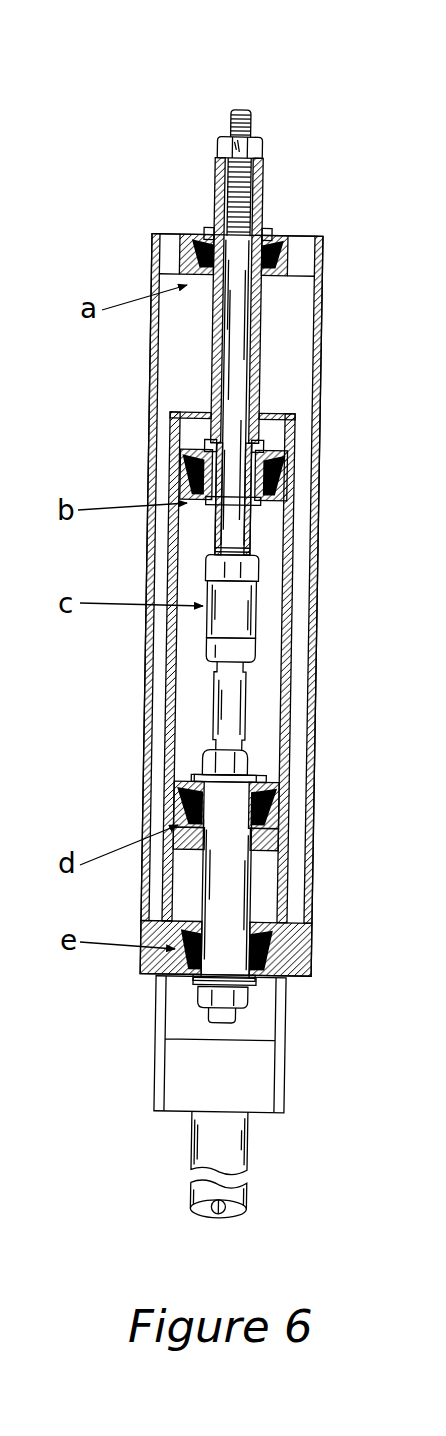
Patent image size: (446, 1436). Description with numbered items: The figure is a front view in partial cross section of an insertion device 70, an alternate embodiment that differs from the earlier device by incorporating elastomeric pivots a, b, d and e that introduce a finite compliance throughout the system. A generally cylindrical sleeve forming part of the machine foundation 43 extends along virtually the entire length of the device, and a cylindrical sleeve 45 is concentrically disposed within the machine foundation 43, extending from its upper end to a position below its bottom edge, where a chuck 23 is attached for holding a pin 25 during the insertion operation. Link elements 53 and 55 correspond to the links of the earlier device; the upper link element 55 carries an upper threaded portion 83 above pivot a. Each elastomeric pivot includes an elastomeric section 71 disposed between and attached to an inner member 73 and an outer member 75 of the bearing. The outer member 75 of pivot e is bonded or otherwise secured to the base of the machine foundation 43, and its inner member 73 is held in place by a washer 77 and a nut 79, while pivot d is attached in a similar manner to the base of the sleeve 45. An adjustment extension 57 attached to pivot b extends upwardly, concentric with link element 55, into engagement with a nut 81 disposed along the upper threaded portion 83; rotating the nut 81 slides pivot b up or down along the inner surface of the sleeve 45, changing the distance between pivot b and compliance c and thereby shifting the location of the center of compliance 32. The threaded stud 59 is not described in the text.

The insertion device 70 is at (332, 93).
The chuck 23 is at (285, 1080).
The pin 25 is at (250, 1160).
The center of compliance 32 is at (222, 1217).
The machine foundation 43 is at (148, 375).
The sleeve 45 is at (167, 702).
The link element 53 is at (213, 715).
The link element 55 is at (213, 525).
The adjustment extension 57 is at (262, 378).
The threaded stud 59 is at (240, 187).
The elastomeric section 71 is at (277, 277).
The inner member 73 is at (263, 233).
The outer member 75 is at (290, 270).
The washer 77 is at (207, 762).
The nut 79 is at (203, 776).
The nut 81 is at (260, 147).
The upper threaded portion 83 is at (245, 192).